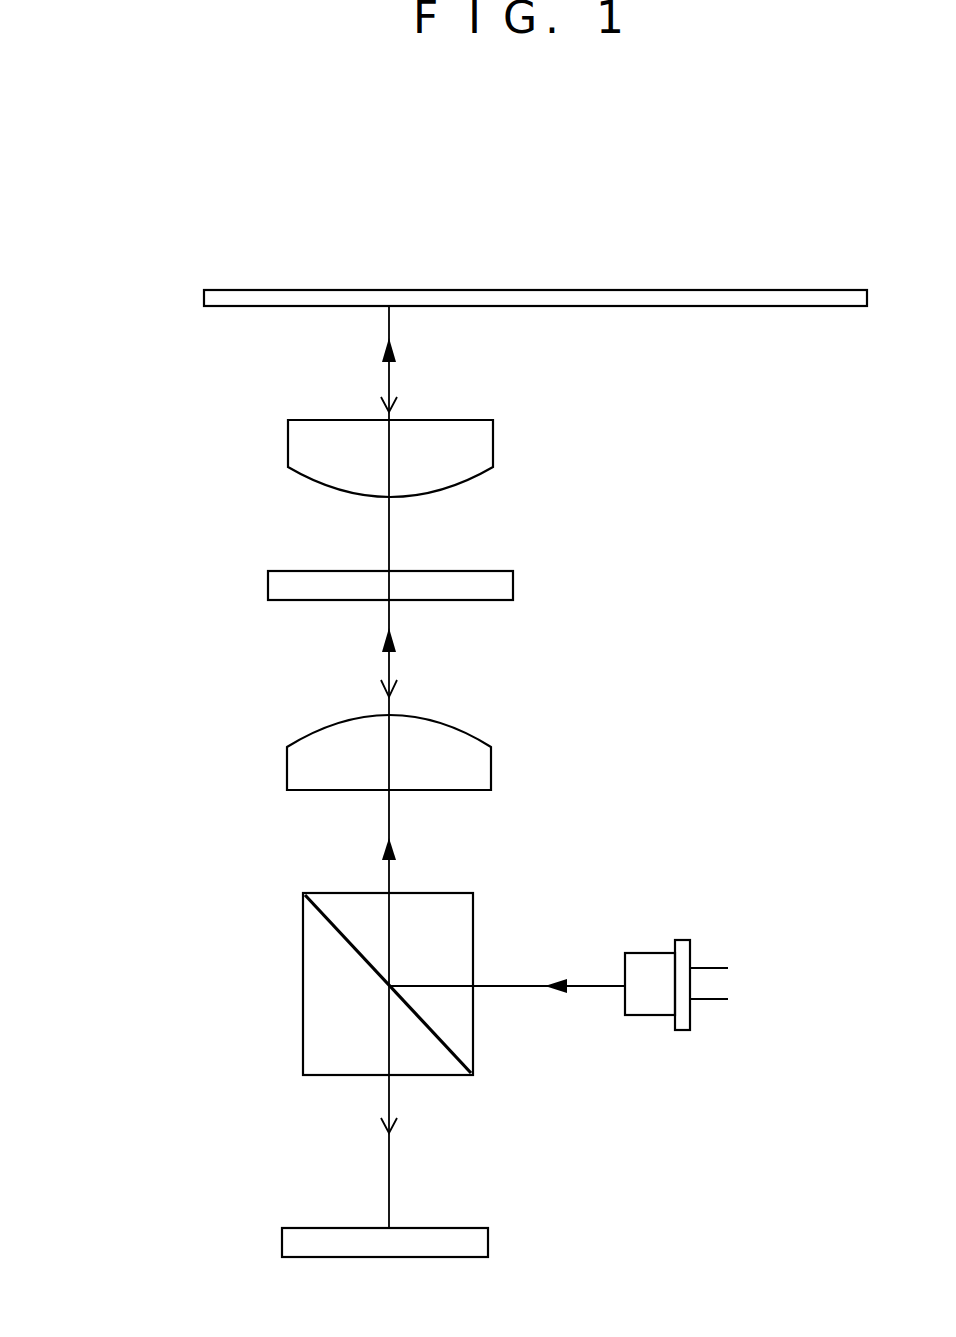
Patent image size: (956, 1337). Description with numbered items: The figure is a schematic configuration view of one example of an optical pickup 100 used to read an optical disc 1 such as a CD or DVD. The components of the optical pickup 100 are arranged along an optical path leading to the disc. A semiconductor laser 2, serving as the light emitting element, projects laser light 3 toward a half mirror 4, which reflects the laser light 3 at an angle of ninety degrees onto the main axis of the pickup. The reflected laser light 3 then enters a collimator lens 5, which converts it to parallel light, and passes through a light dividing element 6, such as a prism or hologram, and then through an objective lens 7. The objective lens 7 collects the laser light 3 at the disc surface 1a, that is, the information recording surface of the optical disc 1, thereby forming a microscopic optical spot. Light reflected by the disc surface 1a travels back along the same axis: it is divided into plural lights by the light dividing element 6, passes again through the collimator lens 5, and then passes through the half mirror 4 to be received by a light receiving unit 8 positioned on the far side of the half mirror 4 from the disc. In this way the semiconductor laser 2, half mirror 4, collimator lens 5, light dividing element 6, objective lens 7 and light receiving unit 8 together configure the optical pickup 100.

The optical pickup 100 is at (152, 592).
The optical disc 1 is at (633, 290).
The disc surface 1a is at (318, 306).
The semiconductor laser 2 is at (653, 1023).
The laser light 3 is at (535, 978).
The half mirror 4 is at (298, 977).
The collimator lens 5 is at (502, 762).
The light dividing element 6 is at (518, 583).
The objective lens 7 is at (500, 457).
The light receiving unit 8 is at (497, 1240).